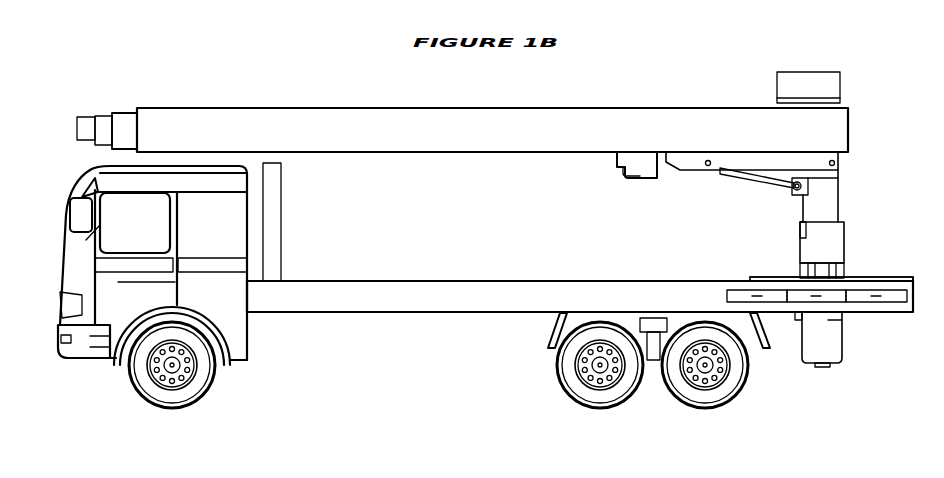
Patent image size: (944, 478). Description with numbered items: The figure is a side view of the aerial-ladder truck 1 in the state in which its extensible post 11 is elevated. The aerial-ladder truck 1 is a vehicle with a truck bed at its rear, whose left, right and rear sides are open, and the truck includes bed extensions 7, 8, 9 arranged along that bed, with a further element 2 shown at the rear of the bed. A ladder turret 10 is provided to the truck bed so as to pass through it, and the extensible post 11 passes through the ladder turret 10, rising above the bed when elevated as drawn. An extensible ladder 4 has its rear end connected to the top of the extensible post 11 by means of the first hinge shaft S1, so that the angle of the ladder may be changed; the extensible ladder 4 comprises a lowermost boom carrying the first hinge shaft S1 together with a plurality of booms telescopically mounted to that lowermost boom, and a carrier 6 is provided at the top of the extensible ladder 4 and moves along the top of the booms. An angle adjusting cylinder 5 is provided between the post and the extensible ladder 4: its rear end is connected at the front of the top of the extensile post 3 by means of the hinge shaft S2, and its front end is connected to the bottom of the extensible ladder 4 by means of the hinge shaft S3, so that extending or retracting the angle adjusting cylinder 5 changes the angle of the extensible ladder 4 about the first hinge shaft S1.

The aerial-ladder truck 1 is at (90, 385).
The mounting platform 2 is at (893, 280).
The extensible post 3 is at (832, 348).
The extensible ladder 4 is at (556, 113).
The angle adjusting cylinder 5 is at (752, 180).
The carrier 6 is at (818, 71).
The bed extension 7 is at (777, 298).
The bed extension 8 is at (842, 298).
The bed extension 9 is at (890, 298).
The ladder turret 10 is at (840, 248).
The extensible post 11 is at (838, 205).
The first hinge shaft S1 is at (836, 163).
The hinge shaft S2 is at (796, 182).
The hinge shaft S3 is at (708, 160).